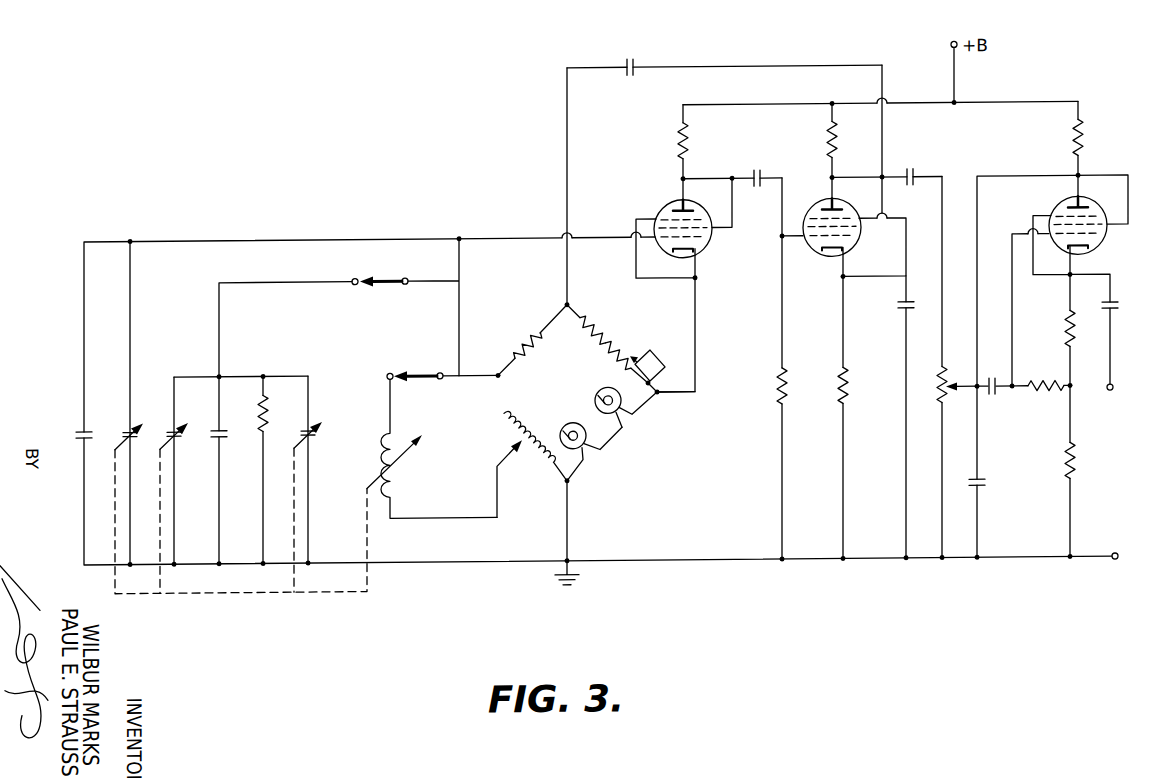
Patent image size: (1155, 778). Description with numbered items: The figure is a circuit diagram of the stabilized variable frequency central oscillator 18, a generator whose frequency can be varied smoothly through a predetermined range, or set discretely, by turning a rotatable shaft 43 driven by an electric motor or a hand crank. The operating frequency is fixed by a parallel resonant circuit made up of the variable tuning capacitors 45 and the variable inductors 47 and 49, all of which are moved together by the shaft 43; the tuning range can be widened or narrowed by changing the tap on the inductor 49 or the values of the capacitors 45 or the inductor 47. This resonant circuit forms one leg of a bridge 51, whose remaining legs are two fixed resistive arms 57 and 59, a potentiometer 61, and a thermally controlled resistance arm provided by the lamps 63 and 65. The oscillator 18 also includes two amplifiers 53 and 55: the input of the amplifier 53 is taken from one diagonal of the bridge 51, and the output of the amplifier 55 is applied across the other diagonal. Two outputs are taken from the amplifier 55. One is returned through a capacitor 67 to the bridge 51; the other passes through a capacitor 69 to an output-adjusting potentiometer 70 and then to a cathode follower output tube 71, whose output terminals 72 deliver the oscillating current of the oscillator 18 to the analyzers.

The oscillator 18 is at (458, 194).
The rotatable shaft 43 is at (325, 594).
The variable tuning capacitor 45 is at (311, 433).
The variable inductor 47 is at (396, 476).
The variable inductor 49 is at (528, 478).
The bridge 51 is at (575, 387).
The amplifier 53 is at (709, 255).
The amplifier 55 is at (858, 256).
The fixed resistive arm 57 is at (525, 342).
The fixed resistive arm 59 is at (605, 332).
The potentiometer 61 is at (657, 362).
The lamp 63 is at (586, 452).
The lamp 65 is at (620, 417).
The capacitor 67 is at (631, 68).
The capacitor 69 is at (910, 178).
The output-adjusting potentiometer 70 is at (936, 394).
The cathode follower output tube 71 is at (1103, 256).
The output terminals 72 is at (1119, 549).